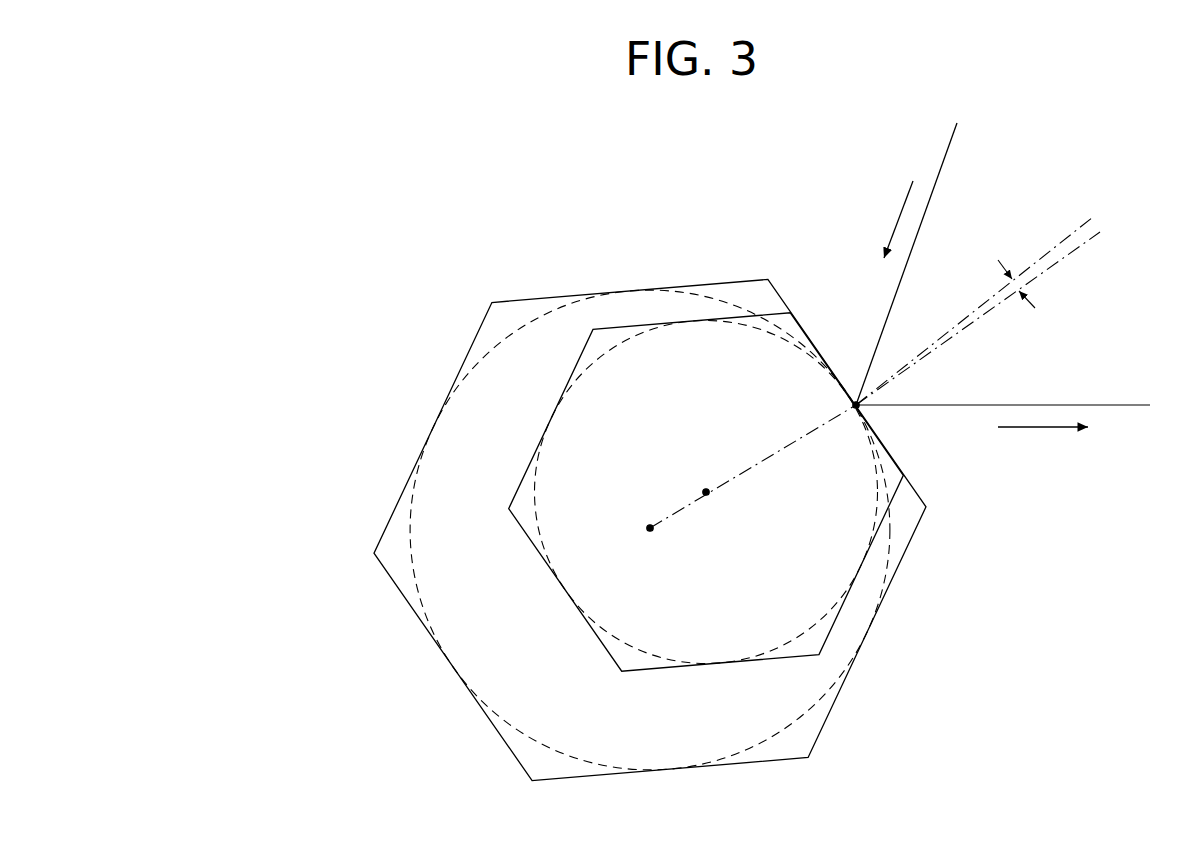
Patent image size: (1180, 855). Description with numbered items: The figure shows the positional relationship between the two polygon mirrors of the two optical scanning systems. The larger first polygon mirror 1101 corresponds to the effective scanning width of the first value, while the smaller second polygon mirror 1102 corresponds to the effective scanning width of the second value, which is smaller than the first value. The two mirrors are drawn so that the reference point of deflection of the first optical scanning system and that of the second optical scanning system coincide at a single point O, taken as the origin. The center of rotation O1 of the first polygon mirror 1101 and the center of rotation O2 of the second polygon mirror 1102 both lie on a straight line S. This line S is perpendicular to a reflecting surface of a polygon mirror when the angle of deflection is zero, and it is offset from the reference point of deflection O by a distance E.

The first polygon mirror 1101 is at (387, 528).
The second polygon mirror 1102 is at (829, 637).
The center of rotation of the first polygon mirror O1 is at (648, 529).
The center of rotation of the second polygon mirror O2 is at (706, 490).
The straight line S is at (777, 440).
The distance E is at (978, 311).